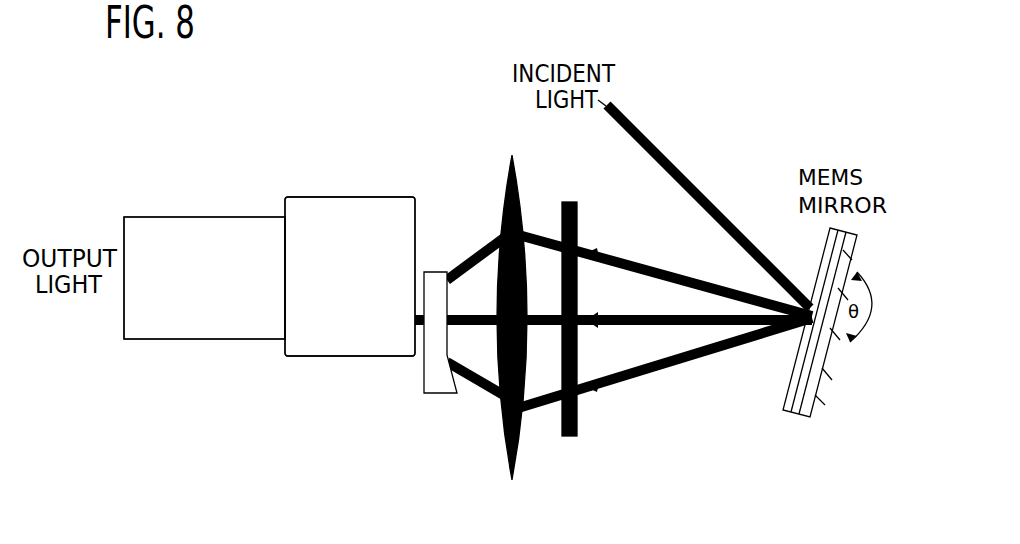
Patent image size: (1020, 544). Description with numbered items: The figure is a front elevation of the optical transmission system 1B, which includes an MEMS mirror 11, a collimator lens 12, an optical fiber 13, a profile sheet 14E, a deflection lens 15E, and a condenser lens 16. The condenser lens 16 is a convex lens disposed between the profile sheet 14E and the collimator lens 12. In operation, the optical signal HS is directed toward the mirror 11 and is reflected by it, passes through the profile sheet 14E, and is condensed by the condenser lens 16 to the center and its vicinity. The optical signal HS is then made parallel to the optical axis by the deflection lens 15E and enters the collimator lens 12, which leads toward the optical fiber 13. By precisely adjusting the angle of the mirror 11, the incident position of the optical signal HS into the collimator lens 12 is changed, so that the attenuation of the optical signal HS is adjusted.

The optical transmission system 1B is at (330, 140).
The optical fiber 13 is at (196, 339).
The collimator lens 12 is at (321, 356).
The deflection lens 15E is at (435, 394).
The condenser lens 16 is at (505, 460).
The profile sheet 14E is at (567, 437).
The optical signal HS is at (690, 180).
The MEMS mirror 11 is at (787, 408).